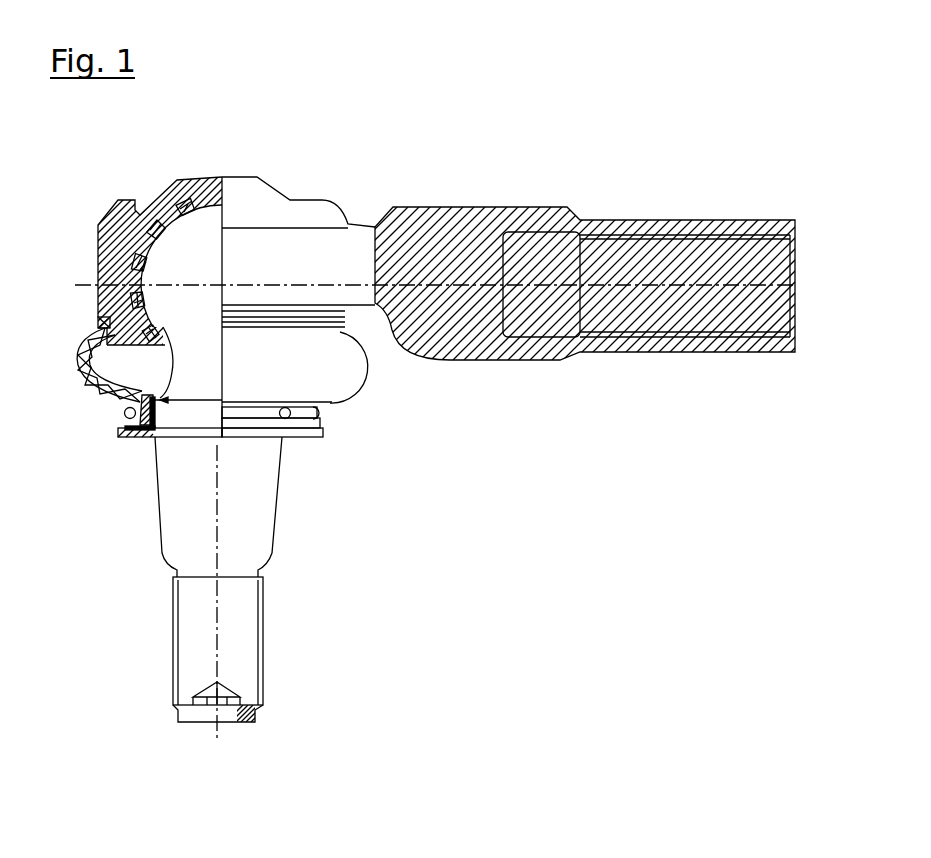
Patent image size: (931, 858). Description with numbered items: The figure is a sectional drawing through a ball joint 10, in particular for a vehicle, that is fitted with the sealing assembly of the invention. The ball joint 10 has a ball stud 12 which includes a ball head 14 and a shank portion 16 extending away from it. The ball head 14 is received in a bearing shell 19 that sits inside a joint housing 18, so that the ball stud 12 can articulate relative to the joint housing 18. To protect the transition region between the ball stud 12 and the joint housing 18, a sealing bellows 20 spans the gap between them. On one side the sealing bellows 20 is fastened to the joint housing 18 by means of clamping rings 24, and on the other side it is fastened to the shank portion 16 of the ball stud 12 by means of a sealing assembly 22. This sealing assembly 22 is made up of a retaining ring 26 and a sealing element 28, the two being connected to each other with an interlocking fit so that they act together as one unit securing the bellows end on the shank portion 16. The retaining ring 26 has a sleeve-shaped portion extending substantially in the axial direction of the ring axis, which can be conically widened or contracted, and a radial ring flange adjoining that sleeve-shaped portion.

The ball joint 10 is at (352, 162).
The ball stud 12 is at (158, 519).
The ball head 14 is at (180, 242).
The shank portion 16 is at (253, 523).
The joint housing 18 is at (108, 250).
The bearing shell 19 is at (133, 230).
The sealing bellows 20 is at (85, 380).
The sealing assembly 22 is at (85, 442).
The clamping rings 24 is at (100, 323).
The retaining ring 26 is at (137, 437).
The sealing element 28 is at (145, 437).